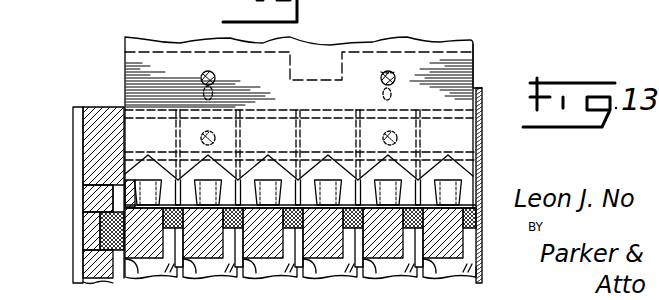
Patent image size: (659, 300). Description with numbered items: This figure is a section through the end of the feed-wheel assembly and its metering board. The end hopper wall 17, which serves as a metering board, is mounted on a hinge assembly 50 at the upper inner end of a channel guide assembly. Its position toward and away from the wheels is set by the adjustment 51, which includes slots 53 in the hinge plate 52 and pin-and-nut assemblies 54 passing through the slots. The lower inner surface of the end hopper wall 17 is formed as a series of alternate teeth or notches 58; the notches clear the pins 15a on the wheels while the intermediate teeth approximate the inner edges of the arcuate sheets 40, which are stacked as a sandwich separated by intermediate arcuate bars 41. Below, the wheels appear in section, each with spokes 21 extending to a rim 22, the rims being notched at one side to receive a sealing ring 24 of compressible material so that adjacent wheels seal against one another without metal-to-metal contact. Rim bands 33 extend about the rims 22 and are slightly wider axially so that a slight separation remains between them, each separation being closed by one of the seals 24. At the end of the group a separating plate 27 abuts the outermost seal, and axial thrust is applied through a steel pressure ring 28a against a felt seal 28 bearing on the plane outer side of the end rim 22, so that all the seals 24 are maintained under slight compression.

The end hopper wall 17 is at (180, 43).
The hinge assembly 50 is at (148, 148).
The pin-and-nut assembly 54 is at (387, 69).
The adjustment 51 is at (392, 62).
The slot 53 is at (382, 92).
The hinge plate 52 is at (460, 70).
The separating plate 27 is at (480, 106).
The arcuate bar 41 is at (449, 137).
The teeth or notches 58 is at (288, 163).
The arcuate sheet 40 is at (455, 170).
The rim band 33 is at (489, 191).
The sealing ring 24 is at (478, 222).
The pin 15a is at (147, 195).
The steel pressure ring 28a is at (100, 230).
The seal 28 is at (90, 247).
The rim 22 is at (151, 242).
The spoke 21 is at (207, 272).